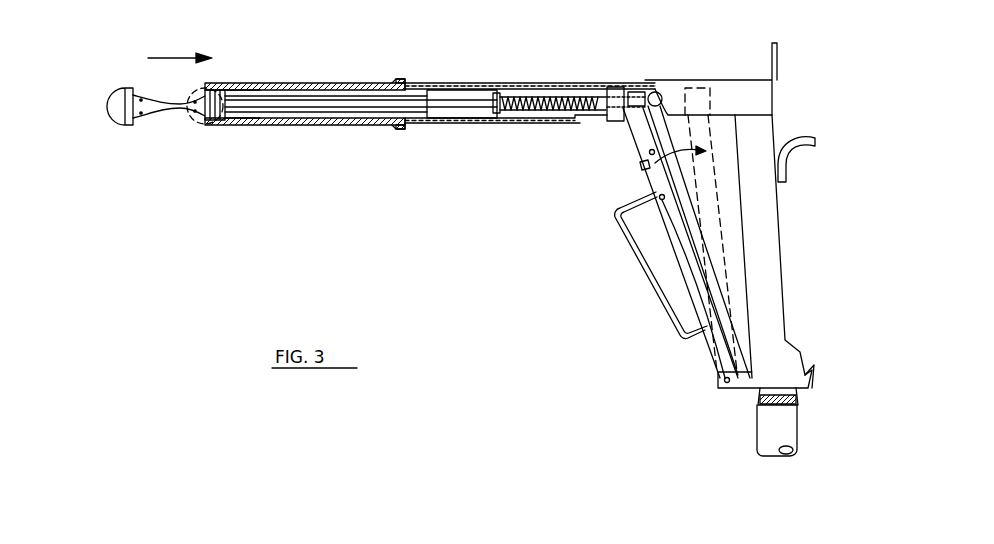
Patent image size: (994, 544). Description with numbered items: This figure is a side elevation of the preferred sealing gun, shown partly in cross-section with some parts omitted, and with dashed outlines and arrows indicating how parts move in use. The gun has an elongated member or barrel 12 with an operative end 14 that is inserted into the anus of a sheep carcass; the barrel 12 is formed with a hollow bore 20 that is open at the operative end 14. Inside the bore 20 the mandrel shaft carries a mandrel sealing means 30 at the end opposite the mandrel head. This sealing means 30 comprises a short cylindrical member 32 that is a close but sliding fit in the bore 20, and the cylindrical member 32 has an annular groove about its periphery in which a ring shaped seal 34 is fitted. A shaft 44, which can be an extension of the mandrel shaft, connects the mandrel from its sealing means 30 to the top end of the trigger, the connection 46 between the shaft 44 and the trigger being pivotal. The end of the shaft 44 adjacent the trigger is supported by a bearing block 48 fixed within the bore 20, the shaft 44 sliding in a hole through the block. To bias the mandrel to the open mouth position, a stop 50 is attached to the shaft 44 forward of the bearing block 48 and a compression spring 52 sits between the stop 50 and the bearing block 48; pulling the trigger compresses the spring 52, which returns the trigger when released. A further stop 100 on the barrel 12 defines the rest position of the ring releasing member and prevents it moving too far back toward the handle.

The elongated member or barrel 12 is at (327, 84).
The operative end 14 is at (207, 94).
The hollow bore 20 is at (318, 113).
The mandrel sealing means 30 is at (232, 90).
The short cylindrical member 32 is at (217, 120).
The ring shaped seal 34 is at (207, 124).
The shaft 44 is at (452, 98).
The connection 46 is at (637, 92).
The bearing block 48 is at (613, 88).
The stop 50 is at (493, 113).
The compression spring 52 is at (540, 113).
The stop 100 is at (396, 81).